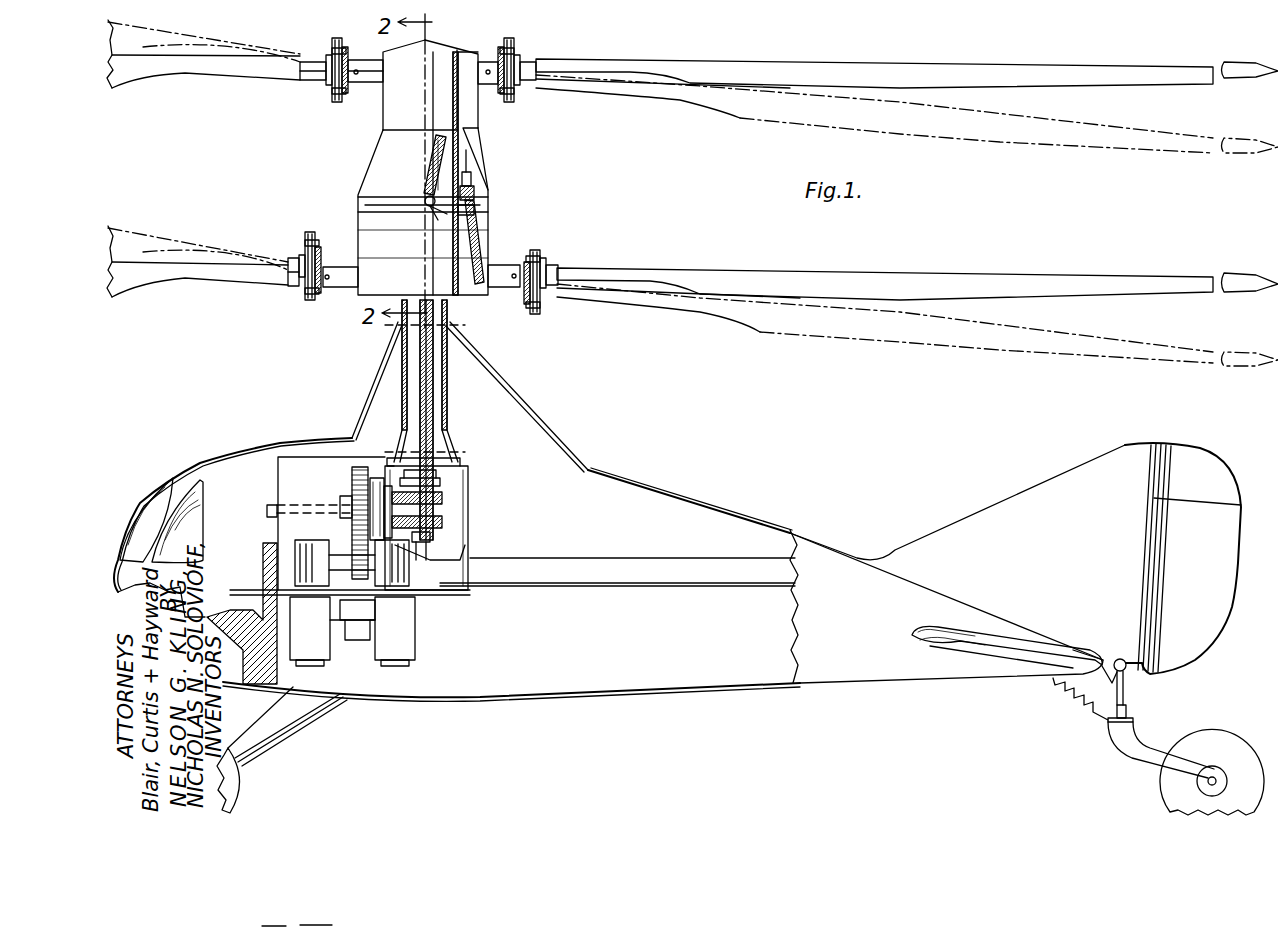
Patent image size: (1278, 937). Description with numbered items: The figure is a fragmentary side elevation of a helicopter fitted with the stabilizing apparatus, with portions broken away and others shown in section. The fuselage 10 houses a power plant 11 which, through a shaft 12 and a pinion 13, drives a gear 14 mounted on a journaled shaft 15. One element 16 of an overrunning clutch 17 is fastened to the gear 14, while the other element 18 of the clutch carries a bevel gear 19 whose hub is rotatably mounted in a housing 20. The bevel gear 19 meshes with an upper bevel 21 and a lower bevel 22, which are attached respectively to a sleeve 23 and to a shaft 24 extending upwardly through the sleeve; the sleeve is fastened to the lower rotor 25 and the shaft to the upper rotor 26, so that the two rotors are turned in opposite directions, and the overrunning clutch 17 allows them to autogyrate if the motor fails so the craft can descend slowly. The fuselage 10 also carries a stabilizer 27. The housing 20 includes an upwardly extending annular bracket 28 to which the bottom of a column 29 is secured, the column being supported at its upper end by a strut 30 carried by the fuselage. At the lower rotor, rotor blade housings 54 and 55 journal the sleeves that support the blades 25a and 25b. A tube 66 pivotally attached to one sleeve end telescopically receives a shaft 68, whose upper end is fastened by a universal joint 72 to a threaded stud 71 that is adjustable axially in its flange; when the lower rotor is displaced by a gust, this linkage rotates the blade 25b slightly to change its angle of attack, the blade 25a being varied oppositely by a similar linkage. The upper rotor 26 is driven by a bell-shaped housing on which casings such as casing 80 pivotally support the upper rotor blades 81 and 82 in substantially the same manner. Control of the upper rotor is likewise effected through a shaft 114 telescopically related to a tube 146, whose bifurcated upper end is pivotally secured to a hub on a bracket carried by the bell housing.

The fuselage 10 is at (642, 467).
The power plant 11 is at (414, 640).
The shaft 12 is at (343, 572).
The pinion 13 is at (356, 572).
The gear 14 is at (350, 476).
The shaft 15 is at (290, 503).
The clutch element 16 is at (348, 494).
The overrunning clutch 17 is at (366, 461).
The clutch element 18 is at (372, 487).
The bevel gear 19 is at (465, 514).
The housing 20 is at (452, 543).
The upper bevel 21 is at (467, 491).
The lower bevel 22 is at (470, 531).
The sleeve 23 is at (438, 404).
The shaft 24 is at (428, 421).
The lower rotor 25 is at (594, 244).
The rotor blade 25a is at (192, 291).
The rotor blade 25b is at (647, 268).
The upper rotor 26 is at (555, 108).
The stabilizer 27 is at (1004, 655).
The annular bracket 28 is at (468, 478).
The column 29 is at (449, 378).
The strut 30 is at (473, 354).
The rotor blade housing 54 is at (318, 291).
The rotor blade housing 55 is at (500, 293).
The tube 66 is at (474, 254).
The shaft 68 is at (482, 224).
The threaded stud 71 is at (468, 178).
The universal joint 72 is at (476, 196).
The casing 80 is at (371, 84).
The upper rotor blade 81 is at (488, 84).
The upper rotor blade 82 is at (192, 76).
The shaft 114 is at (446, 211).
The tube 146 is at (438, 167).